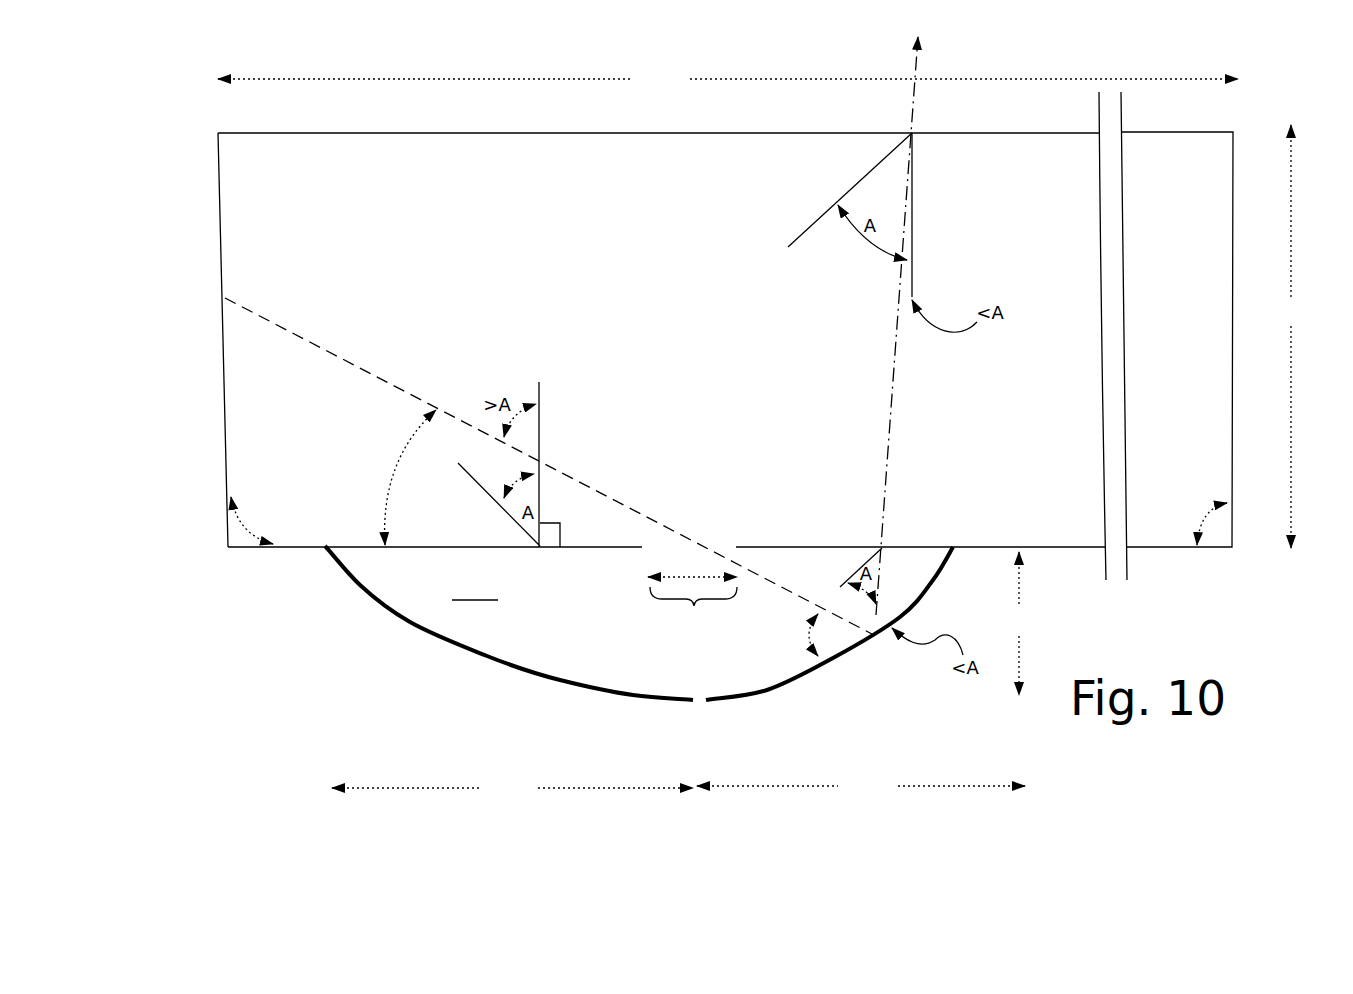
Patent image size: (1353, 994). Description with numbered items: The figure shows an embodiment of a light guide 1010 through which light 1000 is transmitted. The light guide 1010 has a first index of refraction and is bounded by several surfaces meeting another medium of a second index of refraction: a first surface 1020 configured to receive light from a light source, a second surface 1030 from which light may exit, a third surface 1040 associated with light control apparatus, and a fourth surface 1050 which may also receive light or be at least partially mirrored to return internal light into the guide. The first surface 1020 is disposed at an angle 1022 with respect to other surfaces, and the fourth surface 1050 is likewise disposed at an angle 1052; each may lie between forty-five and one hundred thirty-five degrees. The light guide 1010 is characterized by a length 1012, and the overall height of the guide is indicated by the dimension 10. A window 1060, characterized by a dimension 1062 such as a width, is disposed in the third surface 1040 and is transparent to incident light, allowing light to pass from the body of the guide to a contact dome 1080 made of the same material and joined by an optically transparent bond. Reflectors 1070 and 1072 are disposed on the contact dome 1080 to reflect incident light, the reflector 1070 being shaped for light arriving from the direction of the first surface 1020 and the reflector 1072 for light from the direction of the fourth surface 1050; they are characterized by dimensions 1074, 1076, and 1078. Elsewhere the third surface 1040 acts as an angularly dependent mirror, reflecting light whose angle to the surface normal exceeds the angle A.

The height of light guide 10 is at (1281, 336).
The light 1000 is at (306, 335).
The light guide 1010 is at (222, 121).
The length 1012 is at (728, 80).
The first surface 1020 is at (223, 342).
The angle 1022 is at (276, 502).
The second surface 1030 is at (423, 133).
The third surface 1040 is at (305, 548).
The fourth surface 1050 is at (1233, 417).
The angle 1052 is at (1196, 503).
The window 1060 is at (716, 536).
The dimension 1062 is at (693, 607).
The reflector 1070 is at (762, 700).
The reflector 1072 is at (483, 655).
The dimension 1074 is at (1013, 623).
The dimension 1076 is at (512, 788).
The dimension 1078 is at (861, 788).
The contact dome 1080 is at (475, 589).